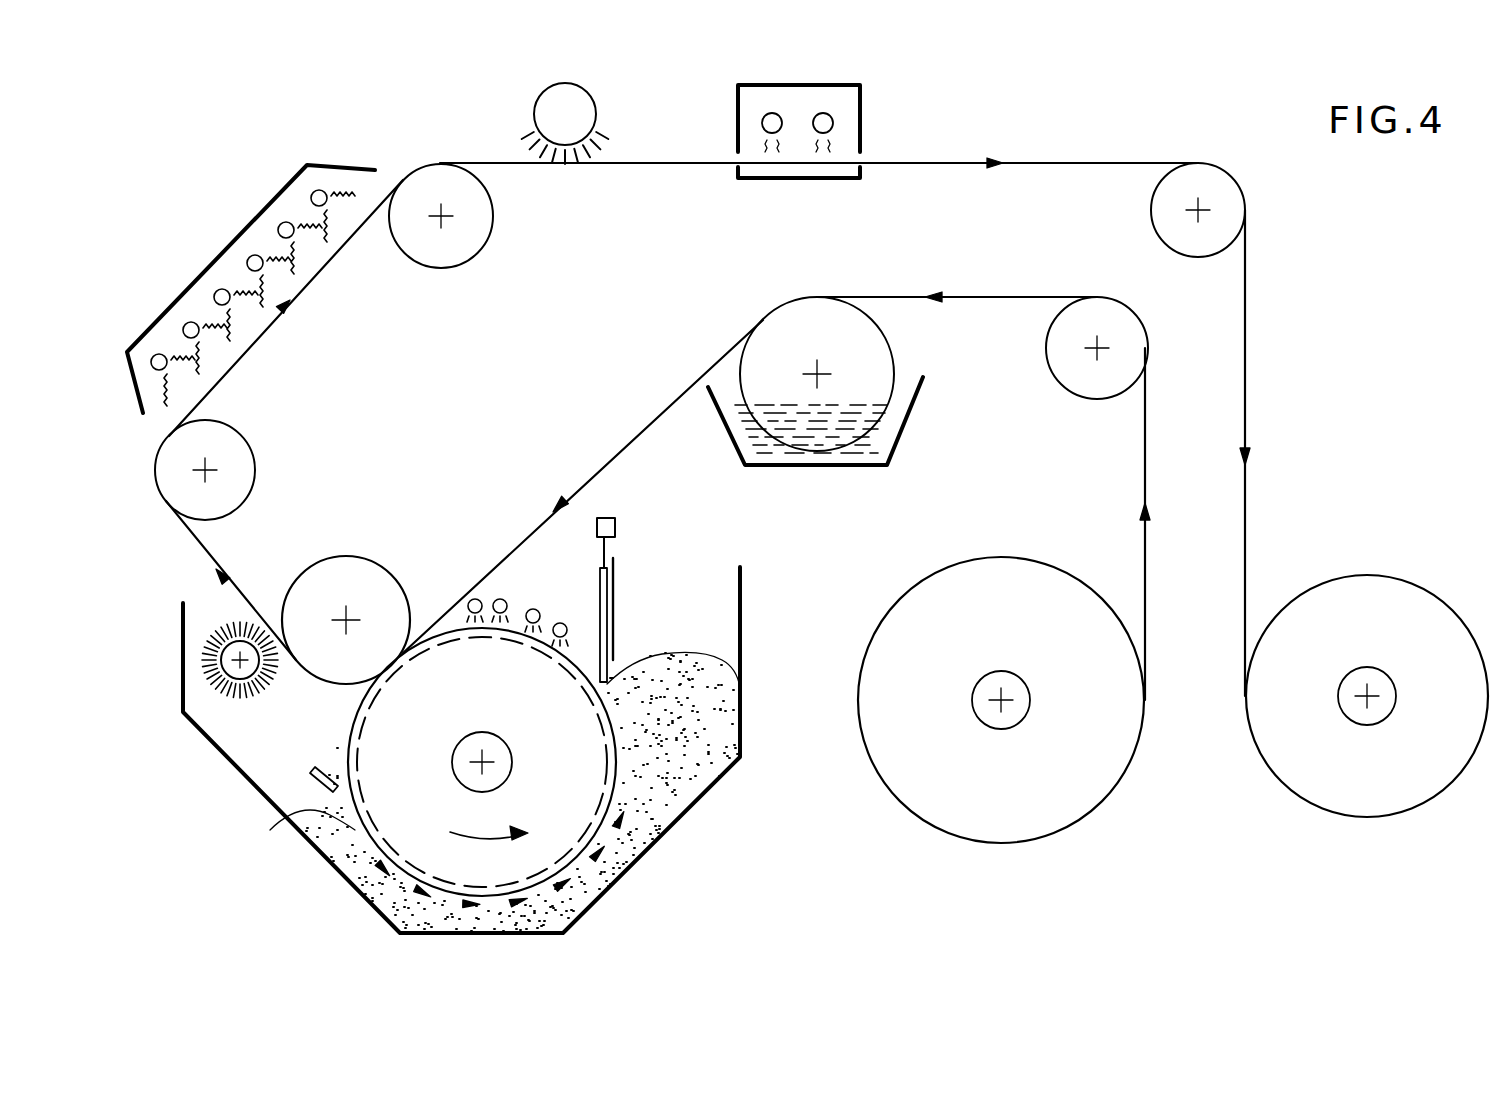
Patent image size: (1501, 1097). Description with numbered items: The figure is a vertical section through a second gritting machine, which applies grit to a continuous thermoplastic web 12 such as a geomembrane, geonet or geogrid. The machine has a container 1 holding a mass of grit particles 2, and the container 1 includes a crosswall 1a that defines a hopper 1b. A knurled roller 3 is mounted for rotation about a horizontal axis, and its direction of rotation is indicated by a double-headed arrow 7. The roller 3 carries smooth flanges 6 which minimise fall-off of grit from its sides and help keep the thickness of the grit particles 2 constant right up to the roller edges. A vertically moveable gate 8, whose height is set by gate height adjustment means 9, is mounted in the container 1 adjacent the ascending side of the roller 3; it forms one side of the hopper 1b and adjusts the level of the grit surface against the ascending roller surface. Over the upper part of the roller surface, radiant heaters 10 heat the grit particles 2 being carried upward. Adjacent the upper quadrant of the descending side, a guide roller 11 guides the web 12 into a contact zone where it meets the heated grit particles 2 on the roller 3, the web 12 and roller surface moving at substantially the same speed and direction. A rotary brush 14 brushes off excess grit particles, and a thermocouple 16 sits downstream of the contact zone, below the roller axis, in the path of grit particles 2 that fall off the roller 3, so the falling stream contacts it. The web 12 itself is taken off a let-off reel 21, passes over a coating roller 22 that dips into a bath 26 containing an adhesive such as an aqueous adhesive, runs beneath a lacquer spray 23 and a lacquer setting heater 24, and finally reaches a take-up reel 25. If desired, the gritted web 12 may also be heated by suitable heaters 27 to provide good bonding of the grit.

The container 1 is at (350, 892).
The crosswall 1a is at (615, 640).
The hopper 1b is at (690, 594).
The grit particles 2 is at (717, 672).
The roller 3 is at (550, 822).
The smooth flanges 6 is at (440, 632).
The double-headed arrow 7 is at (478, 837).
The gate 8 is at (600, 600).
The gate height adjustment means 9 is at (614, 530).
The radiant heaters 10 is at (534, 610).
The guide roller 11 is at (348, 555).
The thermoplastic web 12 is at (612, 452).
The rotary brush 14 is at (260, 678).
The thermocouple 16 is at (308, 786).
The let-off reel 21 is at (1072, 798).
The coating roller 22 is at (870, 345).
The lacquer spray 23 is at (533, 113).
The lacquer setting heater 24 is at (860, 108).
The take-up reel 25 is at (1293, 777).
The bath 26 is at (894, 452).
The heaters 27 is at (255, 262).